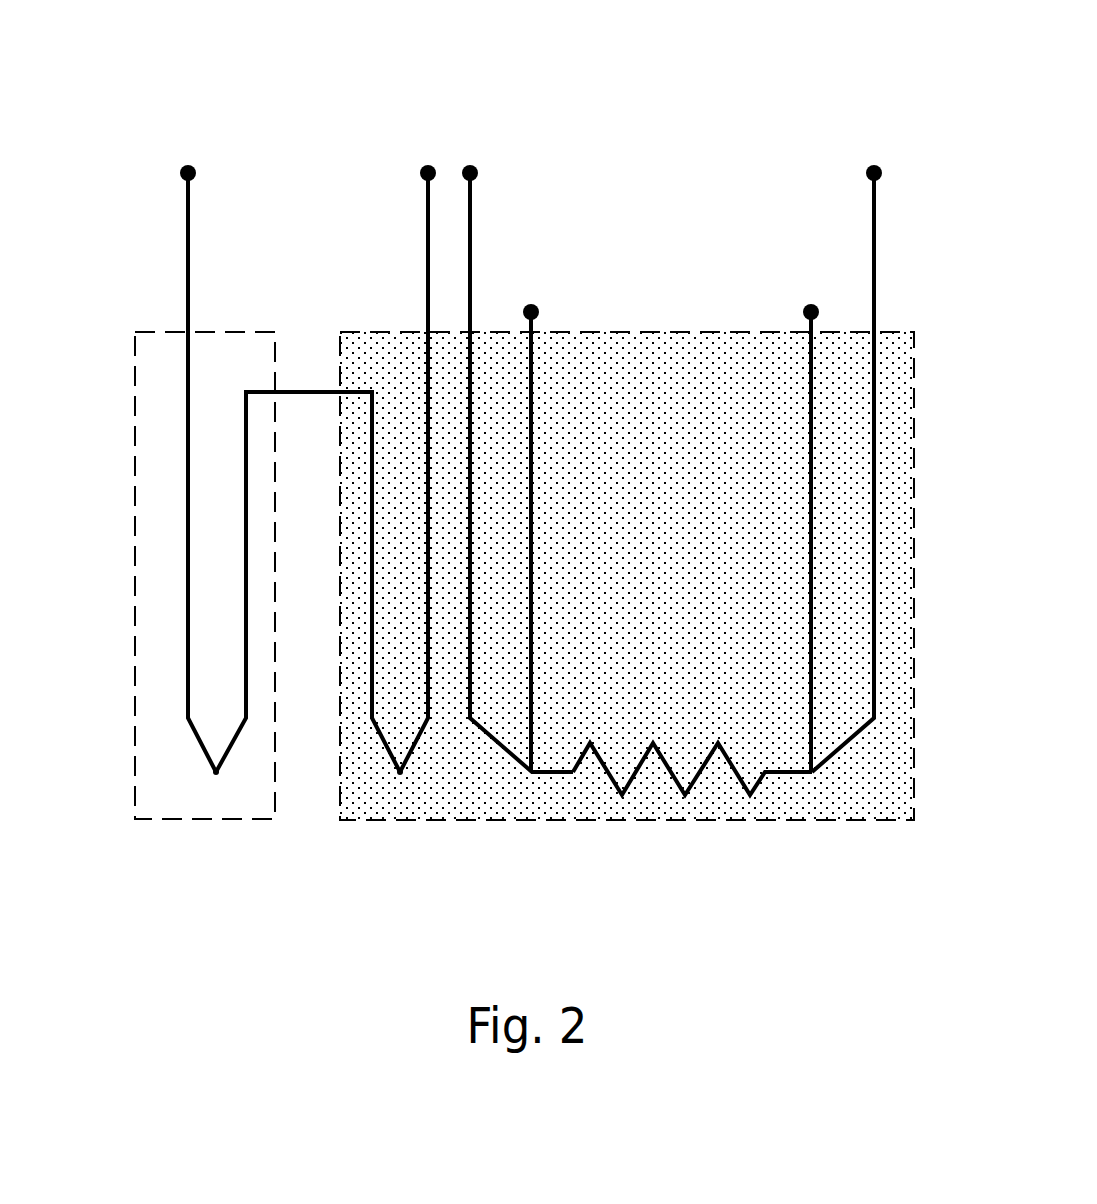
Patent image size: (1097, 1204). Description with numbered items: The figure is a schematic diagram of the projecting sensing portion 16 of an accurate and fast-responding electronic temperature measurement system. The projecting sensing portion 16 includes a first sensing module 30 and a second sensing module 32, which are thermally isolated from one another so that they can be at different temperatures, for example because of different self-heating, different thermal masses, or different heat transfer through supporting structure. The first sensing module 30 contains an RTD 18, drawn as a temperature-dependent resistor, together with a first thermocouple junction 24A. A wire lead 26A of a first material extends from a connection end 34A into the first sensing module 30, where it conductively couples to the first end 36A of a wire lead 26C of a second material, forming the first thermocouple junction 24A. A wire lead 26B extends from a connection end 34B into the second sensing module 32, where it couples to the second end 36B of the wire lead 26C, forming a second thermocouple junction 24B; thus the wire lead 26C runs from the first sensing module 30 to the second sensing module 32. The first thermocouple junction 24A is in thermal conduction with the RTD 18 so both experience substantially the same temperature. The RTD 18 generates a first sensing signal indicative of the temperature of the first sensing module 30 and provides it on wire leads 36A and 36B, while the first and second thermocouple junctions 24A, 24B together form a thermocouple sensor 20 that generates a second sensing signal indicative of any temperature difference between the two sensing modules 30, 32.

The projecting sensing portion 16 is at (795, 105).
The RTD 18 is at (606, 779).
The thermocouple sensor 20 is at (262, 660).
The first thermocouple junction 24A is at (400, 783).
The second thermocouple junction 24B is at (213, 786).
The wire lead 26A is at (427, 263).
The wire lead 26B is at (186, 262).
The wire lead 26C is at (316, 391).
The first sensing module 30 is at (760, 821).
The second sensing module 32 is at (225, 822).
The connection end 34A is at (428, 156).
The connection end 34B is at (187, 156).
The first end of wire lead 26C 36A is at (471, 250).
The second end of wire lead 26C 36B is at (873, 244).